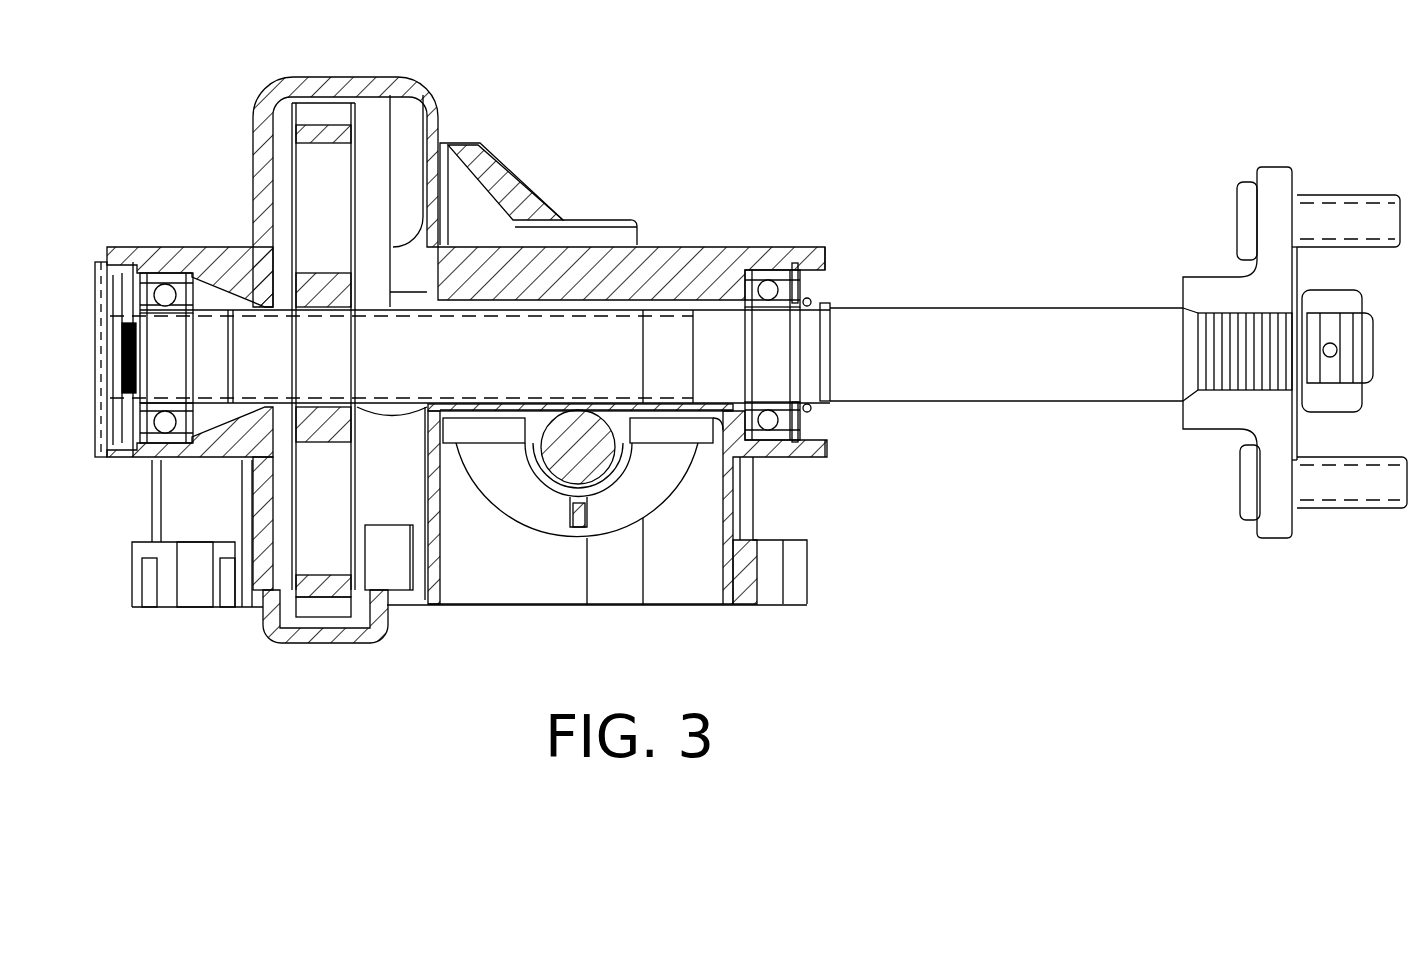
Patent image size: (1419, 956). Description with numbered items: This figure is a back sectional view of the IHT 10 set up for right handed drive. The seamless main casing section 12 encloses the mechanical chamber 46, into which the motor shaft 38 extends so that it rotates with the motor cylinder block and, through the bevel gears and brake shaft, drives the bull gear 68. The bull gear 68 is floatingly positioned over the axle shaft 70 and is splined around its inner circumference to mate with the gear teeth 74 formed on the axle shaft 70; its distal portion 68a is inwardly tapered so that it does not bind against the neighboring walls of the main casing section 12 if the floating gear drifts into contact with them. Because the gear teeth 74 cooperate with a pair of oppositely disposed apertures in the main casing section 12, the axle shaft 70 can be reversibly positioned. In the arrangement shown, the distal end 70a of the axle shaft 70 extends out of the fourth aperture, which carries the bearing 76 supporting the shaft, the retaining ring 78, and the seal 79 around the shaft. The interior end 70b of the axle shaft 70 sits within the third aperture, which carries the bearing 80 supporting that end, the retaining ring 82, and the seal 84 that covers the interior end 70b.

The IHT 10 is at (868, 133).
The main casing section 12 is at (427, 103).
The motor shaft 38 is at (577, 450).
The mechanical chamber 46 is at (410, 484).
The bull gear 68 is at (320, 282).
The distal portion of the bull gear 68a is at (365, 597).
The axle shaft 70 is at (575, 353).
The distal end of the axle shaft 70a is at (1070, 317).
The interior end of the axle shaft 70b is at (168, 367).
The gear teeth 74 is at (498, 303).
The bearing 76 is at (767, 283).
The retaining ring 78 is at (817, 300).
The seal 79 is at (810, 414).
The bearing 80 is at (165, 290).
The retaining ring 82 is at (122, 292).
The seal 84 is at (123, 363).